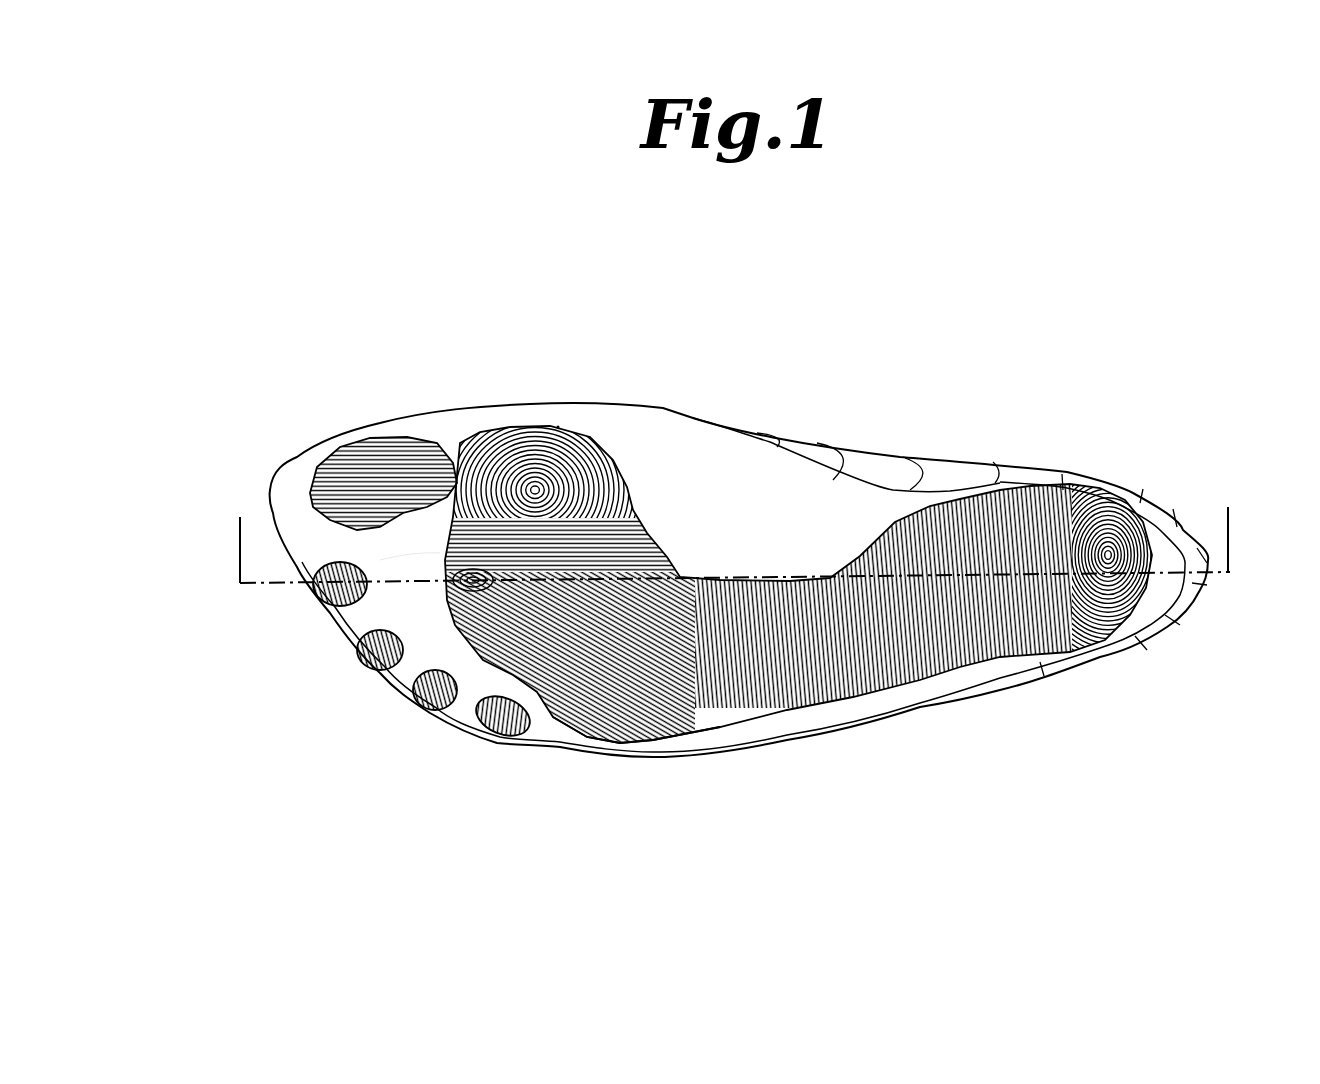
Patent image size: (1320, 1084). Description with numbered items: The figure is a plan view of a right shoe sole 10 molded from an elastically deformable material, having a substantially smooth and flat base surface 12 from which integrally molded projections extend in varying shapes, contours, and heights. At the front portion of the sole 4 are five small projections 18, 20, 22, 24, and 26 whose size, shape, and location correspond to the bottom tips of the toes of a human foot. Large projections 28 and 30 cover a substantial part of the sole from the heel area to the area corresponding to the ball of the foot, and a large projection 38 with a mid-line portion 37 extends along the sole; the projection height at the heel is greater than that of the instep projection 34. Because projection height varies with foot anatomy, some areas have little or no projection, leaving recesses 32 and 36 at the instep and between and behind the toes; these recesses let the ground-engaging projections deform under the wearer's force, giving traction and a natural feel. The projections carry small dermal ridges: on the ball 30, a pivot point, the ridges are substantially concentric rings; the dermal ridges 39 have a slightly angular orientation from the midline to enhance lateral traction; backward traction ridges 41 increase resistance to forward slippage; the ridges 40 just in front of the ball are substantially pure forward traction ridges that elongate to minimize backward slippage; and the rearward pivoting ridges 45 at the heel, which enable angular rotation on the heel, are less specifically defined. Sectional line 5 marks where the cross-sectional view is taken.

The front portion of the sole 4 is at (218, 603).
The sectional line 5- 5 is at (734, 524).
The shoe sole 10 is at (585, 370).
The base surface 12 is at (694, 418).
The projection 18 is at (493, 733).
The projection 20 is at (427, 697).
The projection 22 is at (367, 657).
The projection 24 is at (313, 600).
The projection 26 is at (350, 450).
The large projection 28 is at (1020, 680).
The ball 30 is at (537, 490).
The recess 32 is at (417, 560).
The instep projection 34 is at (790, 605).
The recess 36 is at (340, 550).
The mid-line portion 37 is at (532, 580).
The large projection 38 is at (617, 743).
The dermal ridges 39 is at (603, 523).
The forward traction ridges 40 is at (463, 442).
The backward traction ridges 41 is at (558, 427).
The rearward pivoting ridges 45 is at (1103, 523).